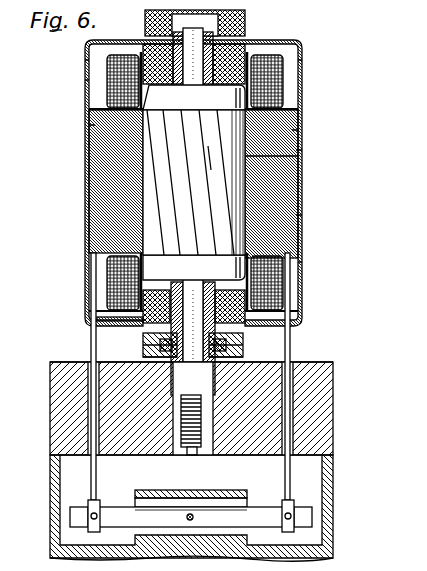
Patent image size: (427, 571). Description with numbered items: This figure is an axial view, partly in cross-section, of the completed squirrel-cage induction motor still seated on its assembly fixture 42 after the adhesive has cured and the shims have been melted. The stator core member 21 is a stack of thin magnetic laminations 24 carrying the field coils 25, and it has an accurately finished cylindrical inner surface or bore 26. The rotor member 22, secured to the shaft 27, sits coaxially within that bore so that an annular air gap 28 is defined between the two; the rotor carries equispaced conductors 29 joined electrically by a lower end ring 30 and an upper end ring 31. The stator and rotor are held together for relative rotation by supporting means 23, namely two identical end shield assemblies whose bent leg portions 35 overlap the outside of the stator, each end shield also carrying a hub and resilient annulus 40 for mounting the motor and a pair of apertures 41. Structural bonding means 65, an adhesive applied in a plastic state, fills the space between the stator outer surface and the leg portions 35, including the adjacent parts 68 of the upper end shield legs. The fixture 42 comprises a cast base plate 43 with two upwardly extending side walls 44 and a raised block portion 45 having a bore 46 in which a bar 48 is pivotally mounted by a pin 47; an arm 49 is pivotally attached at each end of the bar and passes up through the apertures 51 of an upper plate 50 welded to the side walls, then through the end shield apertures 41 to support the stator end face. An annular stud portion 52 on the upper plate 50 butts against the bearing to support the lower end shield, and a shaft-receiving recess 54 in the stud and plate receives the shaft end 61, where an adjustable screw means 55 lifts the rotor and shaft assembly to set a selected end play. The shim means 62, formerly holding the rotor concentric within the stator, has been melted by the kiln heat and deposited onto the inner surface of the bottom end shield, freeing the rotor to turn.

The stator core member 21 is at (324, 202).
The rotor member 22 is at (194, 179).
The supporting means 23 is at (88, 220).
The laminations 24 is at (268, 164).
The field coils 25 is at (283, 84).
The inner surface or bore 26 is at (296, 158).
The shaft 27 is at (193, 211).
The annular air gap 28 is at (262, 120).
The conductors 29 is at (208, 146).
The end ring 30 is at (194, 267).
The end ring 31 is at (194, 97).
The leg portions 35 is at (85, 70).
The hub and resilient annulus 40 is at (242, 18).
The apertures 41 is at (100, 42).
The assembly fixture 42 is at (346, 389).
The cast base plate 43 is at (172, 547).
The side walls 44 is at (52, 516).
The raised block portion 45 is at (222, 490).
The bore 46 is at (236, 510).
The pin 47 is at (191, 514).
The bar 48 is at (128, 512).
The arm 49 is at (91, 478).
The upper plate 50 is at (333, 410).
The apertures 51 is at (91, 362).
The annular stud portion 52 is at (148, 345).
The shaft-receiving recess 54 is at (178, 383).
The screw means 55 is at (200, 440).
The shaft end 61 is at (205, 398).
The shim means 62 is at (125, 319).
The structural bonding means 65 is at (89, 128).
The adjacent parts 68 is at (89, 110).